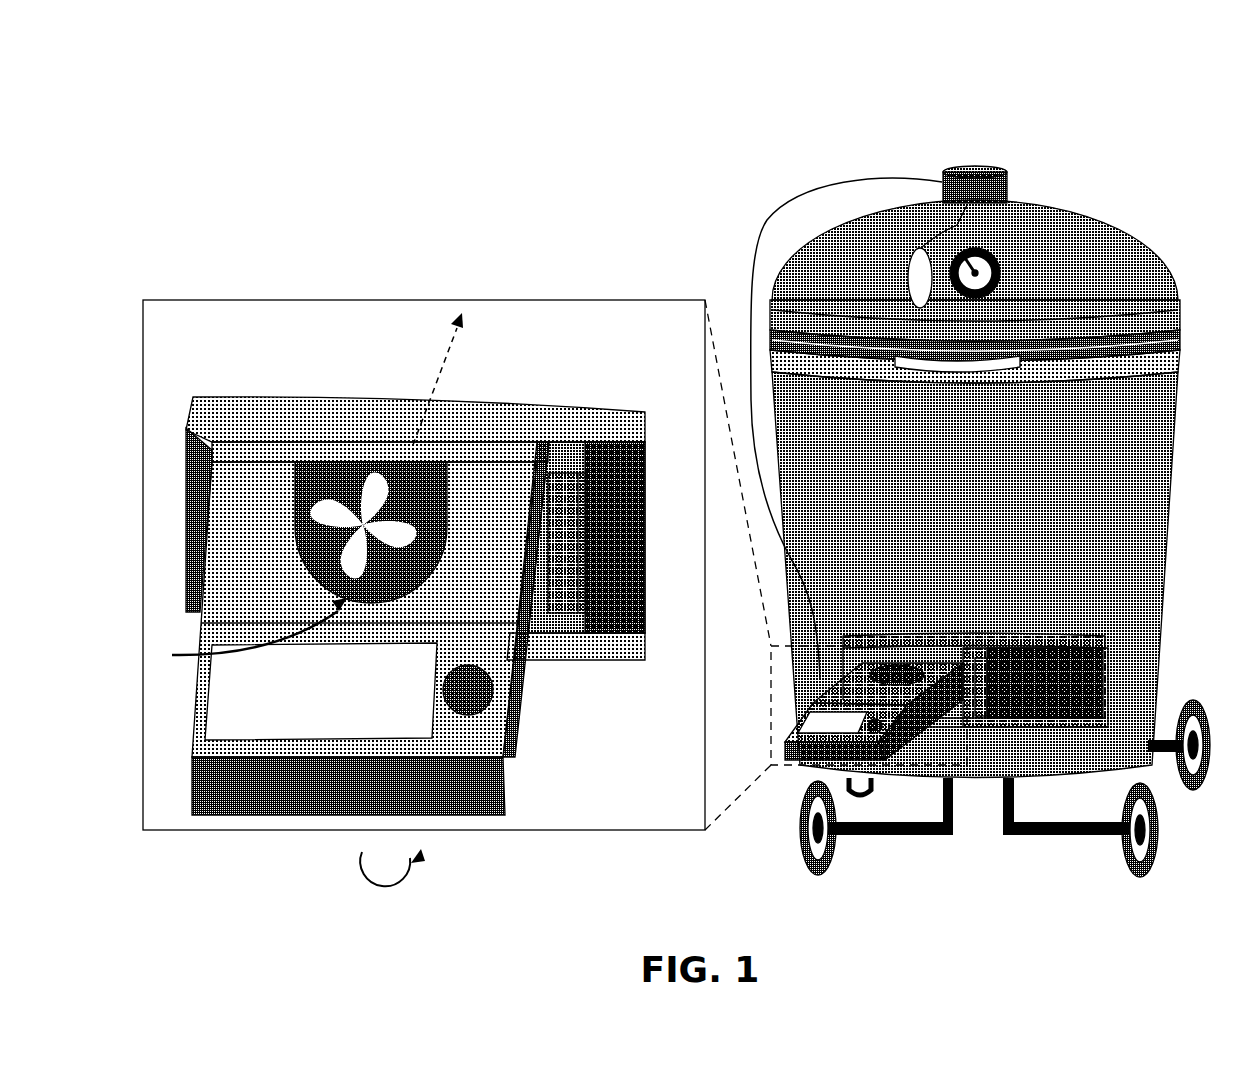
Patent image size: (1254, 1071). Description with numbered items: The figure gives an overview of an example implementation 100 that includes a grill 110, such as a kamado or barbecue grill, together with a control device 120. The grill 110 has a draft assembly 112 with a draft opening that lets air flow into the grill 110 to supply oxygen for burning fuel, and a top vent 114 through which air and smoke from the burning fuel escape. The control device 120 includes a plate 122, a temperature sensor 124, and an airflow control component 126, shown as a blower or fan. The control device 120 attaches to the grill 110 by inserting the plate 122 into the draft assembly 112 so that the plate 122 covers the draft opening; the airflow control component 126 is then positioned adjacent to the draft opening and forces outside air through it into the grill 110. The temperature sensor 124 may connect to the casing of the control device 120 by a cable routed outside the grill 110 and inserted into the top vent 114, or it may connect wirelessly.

The example implementation 100 is at (199, 86).
The grill 110 is at (1162, 554).
The draft assembly 112 is at (1052, 632).
The top vent 114 is at (975, 171).
The control device 120 is at (905, 748).
The plate 122 is at (973, 648).
The temperature sensor 124 is at (905, 285).
The airflow control component 126 is at (444, 512).